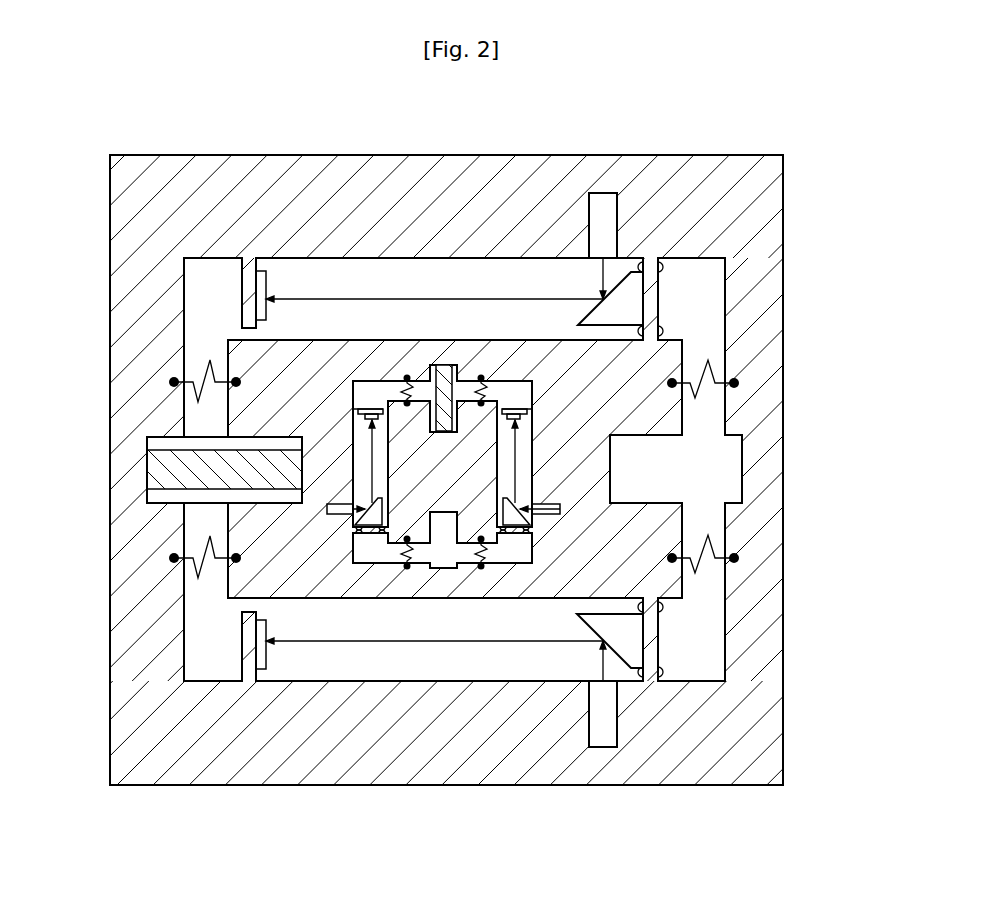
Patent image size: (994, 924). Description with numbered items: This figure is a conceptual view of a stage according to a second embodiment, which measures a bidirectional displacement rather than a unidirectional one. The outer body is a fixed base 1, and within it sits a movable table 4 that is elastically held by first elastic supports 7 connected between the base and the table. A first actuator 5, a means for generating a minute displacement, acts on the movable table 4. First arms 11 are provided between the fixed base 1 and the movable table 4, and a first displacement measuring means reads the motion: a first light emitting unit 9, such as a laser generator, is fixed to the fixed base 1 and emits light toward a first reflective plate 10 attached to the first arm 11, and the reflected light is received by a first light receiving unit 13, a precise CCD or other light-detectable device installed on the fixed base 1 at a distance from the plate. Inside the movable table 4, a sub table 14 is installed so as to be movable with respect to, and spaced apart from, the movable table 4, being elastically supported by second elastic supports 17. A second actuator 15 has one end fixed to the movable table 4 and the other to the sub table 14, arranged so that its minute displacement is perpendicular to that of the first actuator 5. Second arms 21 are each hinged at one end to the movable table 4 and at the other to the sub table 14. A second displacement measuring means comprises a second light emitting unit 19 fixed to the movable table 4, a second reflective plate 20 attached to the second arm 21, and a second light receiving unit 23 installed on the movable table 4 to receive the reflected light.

The fixed base 1 is at (768, 226).
The movable table 4 is at (663, 588).
The first actuator 5 is at (150, 462).
The first elastic supports 7 is at (215, 378).
The first light emitting unit 9 is at (603, 205).
The first reflective plate 10 is at (578, 307).
The first arm 11 is at (655, 300).
The first light receiving unit 13 is at (265, 288).
The sub table 14 is at (412, 546).
The second actuator 15 is at (441, 366).
The second elastic supports 17 is at (491, 554).
The second light emitting unit 19 is at (338, 511).
The second reflective plate 20 is at (368, 500).
The second arms 21 is at (370, 533).
The second light receiving unit 23 is at (360, 417).